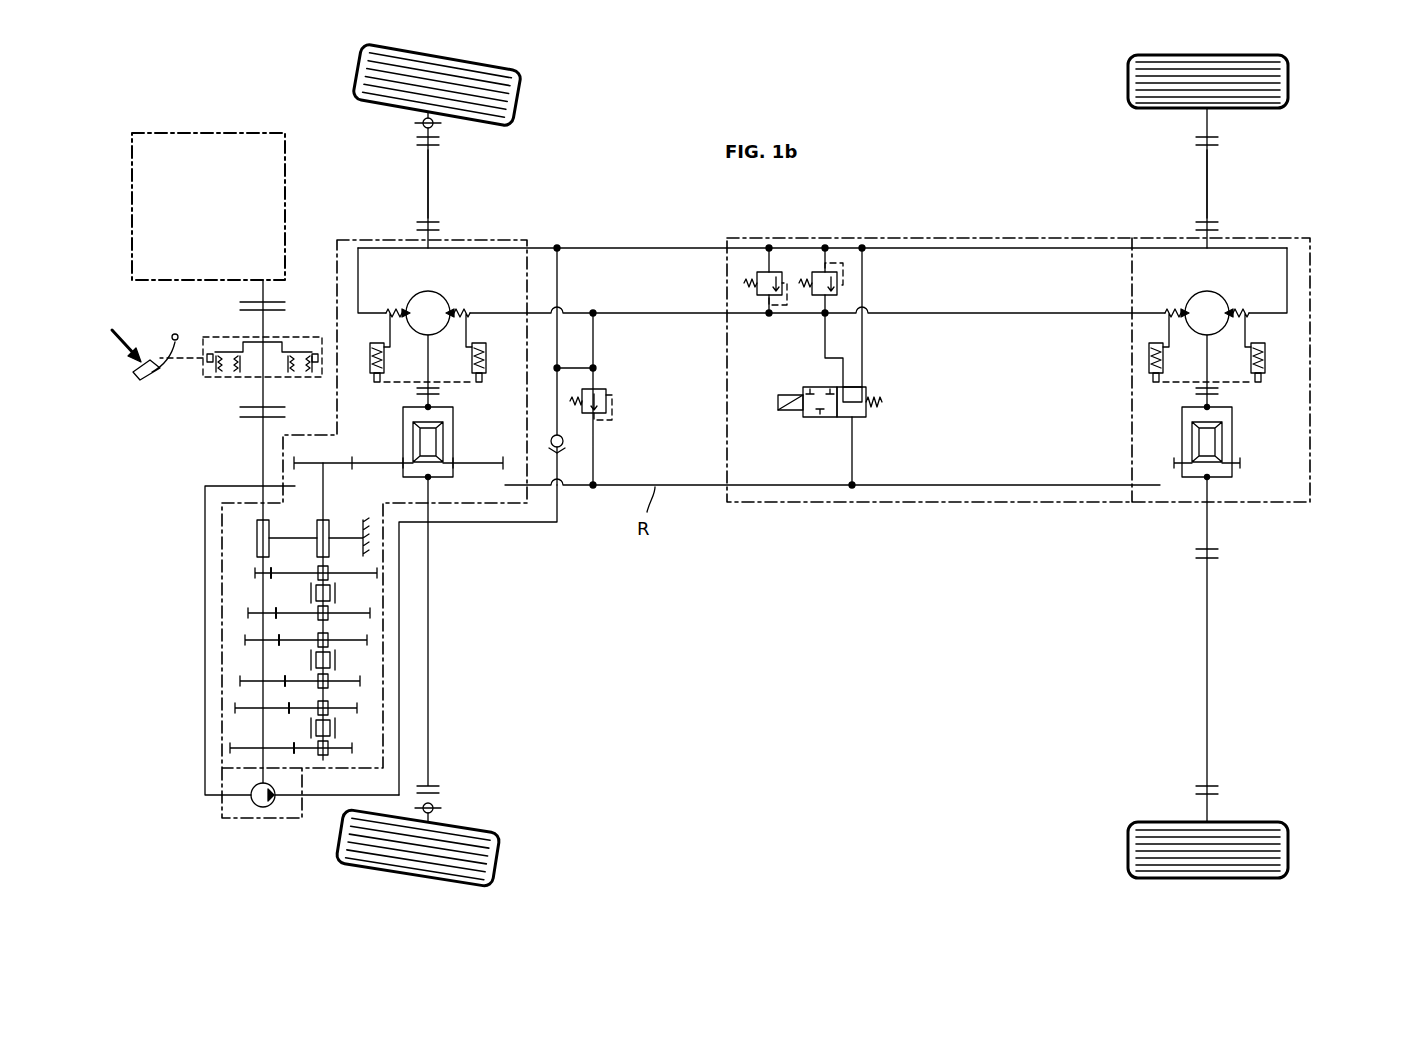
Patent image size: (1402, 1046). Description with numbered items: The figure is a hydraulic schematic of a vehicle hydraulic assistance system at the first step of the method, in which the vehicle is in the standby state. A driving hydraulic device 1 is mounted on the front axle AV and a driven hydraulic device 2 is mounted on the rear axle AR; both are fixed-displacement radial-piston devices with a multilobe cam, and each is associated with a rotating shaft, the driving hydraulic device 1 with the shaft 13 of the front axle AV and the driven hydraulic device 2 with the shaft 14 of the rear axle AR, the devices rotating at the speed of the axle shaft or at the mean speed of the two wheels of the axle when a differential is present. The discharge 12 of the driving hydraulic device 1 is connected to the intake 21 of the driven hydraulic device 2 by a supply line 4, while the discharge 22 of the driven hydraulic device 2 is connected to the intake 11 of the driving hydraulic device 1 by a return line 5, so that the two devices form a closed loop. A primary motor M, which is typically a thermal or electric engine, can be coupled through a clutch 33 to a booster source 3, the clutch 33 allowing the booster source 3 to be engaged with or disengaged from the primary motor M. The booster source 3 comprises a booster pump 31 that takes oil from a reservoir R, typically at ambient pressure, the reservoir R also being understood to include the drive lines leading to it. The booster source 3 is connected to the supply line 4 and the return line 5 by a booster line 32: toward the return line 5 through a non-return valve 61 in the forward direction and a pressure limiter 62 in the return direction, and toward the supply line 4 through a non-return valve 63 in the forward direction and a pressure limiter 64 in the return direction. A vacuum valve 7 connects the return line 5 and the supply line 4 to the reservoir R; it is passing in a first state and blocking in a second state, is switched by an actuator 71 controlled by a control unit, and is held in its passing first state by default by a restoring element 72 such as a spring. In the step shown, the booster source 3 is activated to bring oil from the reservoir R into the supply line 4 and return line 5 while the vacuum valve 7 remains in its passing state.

The primary motor M is at (208, 206).
The front axle AV is at (416, 465).
The rear axle AR is at (1250, 466).
The driving hydraulic device 1 is at (447, 292).
The driven hydraulic device 2 is at (1215, 293).
The intake 11 is at (452, 308).
The discharge 12 is at (405, 308).
The intake 21 is at (1251, 331).
The discharge 22 is at (1165, 331).
The rotating shaft 13 is at (428, 188).
The rear wheel shaft 14 is at (1208, 190).
The booster source 3 is at (302, 679).
The booster pump 31 is at (257, 809).
The booster line 32 is at (545, 523).
The clutch 33 is at (238, 382).
The supply line 4 is at (643, 247).
The return line 5 is at (643, 312).
The non-return valve 61 is at (608, 435).
The non-return valve 63 is at (563, 441).
The pressure limiter 62 is at (633, 401).
The pressure limiter 64 is at (614, 400).
The vacuum valve 7 is at (829, 416).
The actuator 71 is at (788, 395).
The restoring element 72 is at (880, 410).
The reservoir R is at (220, 634).